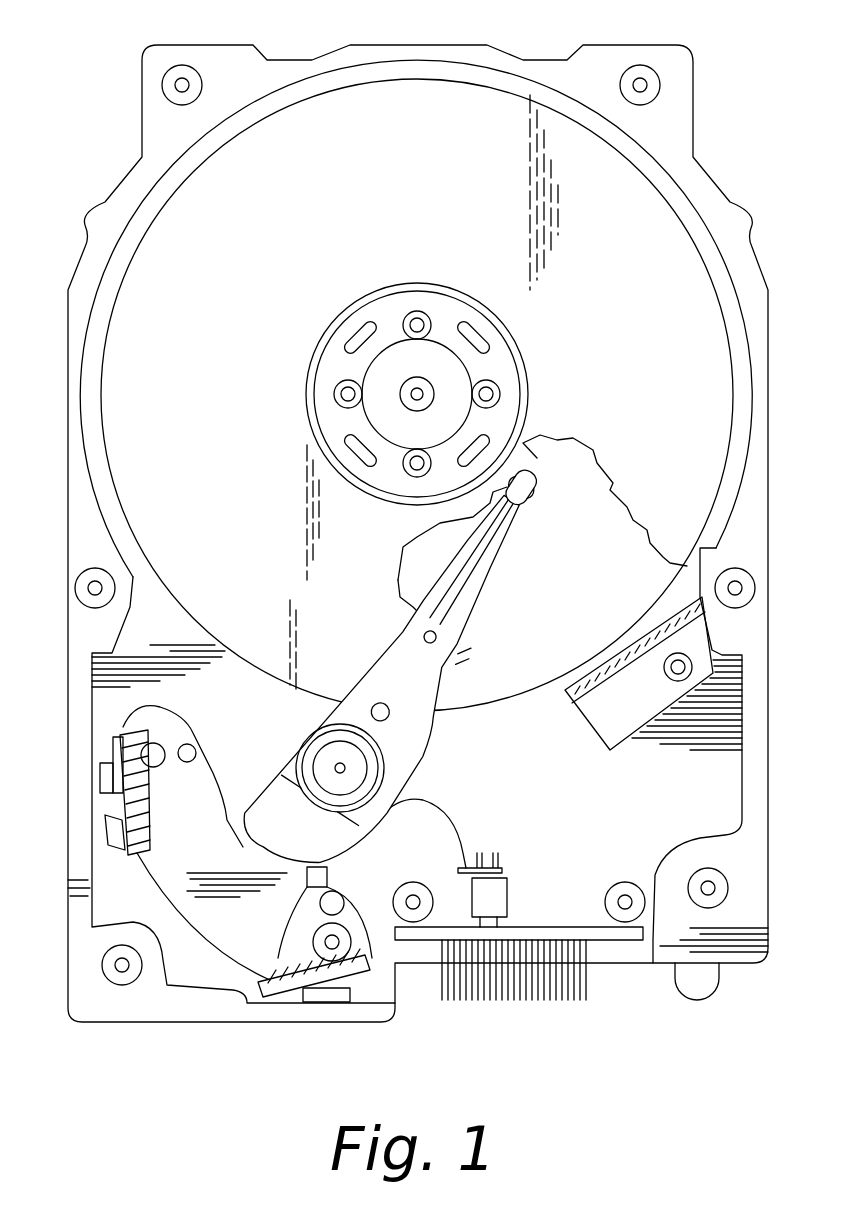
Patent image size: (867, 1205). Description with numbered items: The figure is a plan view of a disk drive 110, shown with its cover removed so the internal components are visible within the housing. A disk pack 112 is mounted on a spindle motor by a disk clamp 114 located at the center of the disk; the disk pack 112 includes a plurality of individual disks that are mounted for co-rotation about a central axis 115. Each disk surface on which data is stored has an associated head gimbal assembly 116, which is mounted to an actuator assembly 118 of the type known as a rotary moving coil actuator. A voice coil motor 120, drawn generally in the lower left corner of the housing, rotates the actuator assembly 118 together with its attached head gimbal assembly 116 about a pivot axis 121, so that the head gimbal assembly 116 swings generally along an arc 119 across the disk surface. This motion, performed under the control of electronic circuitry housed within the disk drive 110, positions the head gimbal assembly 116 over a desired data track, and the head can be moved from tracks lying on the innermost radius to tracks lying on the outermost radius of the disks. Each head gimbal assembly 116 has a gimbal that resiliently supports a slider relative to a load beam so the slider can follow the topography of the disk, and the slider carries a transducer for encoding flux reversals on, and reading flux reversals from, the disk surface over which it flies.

The disk drive 110 is at (748, 84).
The disk pack 112 is at (455, 182).
The disk clamp 114 is at (345, 300).
The central axis 115 is at (420, 391).
The head gimbal assembly 116 is at (541, 469).
The actuator assembly 118 is at (458, 690).
The arc 119 is at (483, 518).
The voice coil motor 120 is at (185, 867).
The pivot axis 121 is at (338, 767).